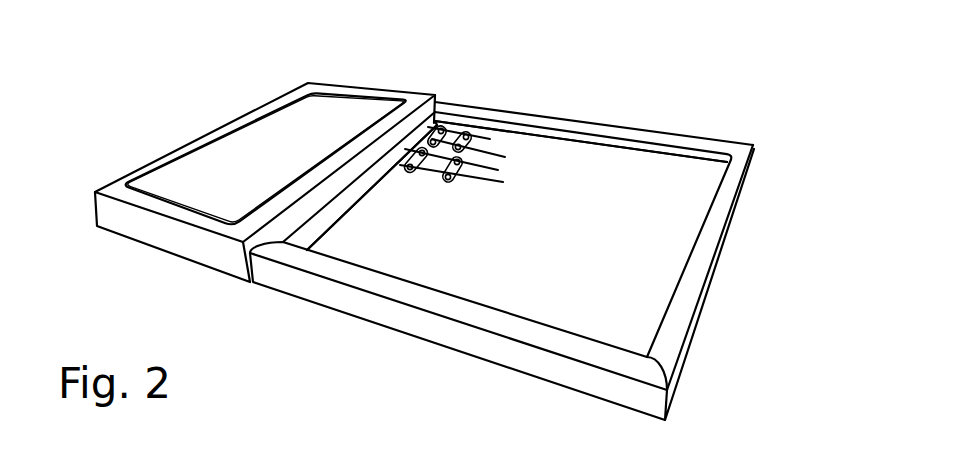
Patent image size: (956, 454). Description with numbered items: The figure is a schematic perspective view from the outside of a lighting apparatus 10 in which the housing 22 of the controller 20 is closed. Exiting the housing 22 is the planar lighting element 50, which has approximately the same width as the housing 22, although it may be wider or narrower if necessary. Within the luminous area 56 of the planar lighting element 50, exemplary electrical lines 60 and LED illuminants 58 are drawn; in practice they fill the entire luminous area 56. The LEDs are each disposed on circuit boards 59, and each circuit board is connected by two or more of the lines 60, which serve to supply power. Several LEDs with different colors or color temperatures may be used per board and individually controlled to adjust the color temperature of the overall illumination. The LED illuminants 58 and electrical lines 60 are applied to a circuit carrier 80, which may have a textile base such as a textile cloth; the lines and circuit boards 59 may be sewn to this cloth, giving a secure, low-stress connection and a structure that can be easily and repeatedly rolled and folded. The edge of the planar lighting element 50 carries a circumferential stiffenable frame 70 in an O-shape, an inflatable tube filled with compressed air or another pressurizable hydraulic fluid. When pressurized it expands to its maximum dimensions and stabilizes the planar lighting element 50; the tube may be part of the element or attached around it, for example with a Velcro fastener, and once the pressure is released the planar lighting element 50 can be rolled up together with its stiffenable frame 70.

The lighting apparatus 10 is at (751, 93).
The controller 20 is at (181, 257).
The housing 22 is at (128, 223).
The planar lighting element 50 is at (722, 264).
The luminous area 56 is at (632, 307).
The LED illuminants 58 is at (465, 133).
The circuit boards 59 is at (447, 179).
The electrical lines 60 is at (500, 154).
The stiffenable frame 70 is at (725, 205).
The circuit carrier 80 is at (629, 190).